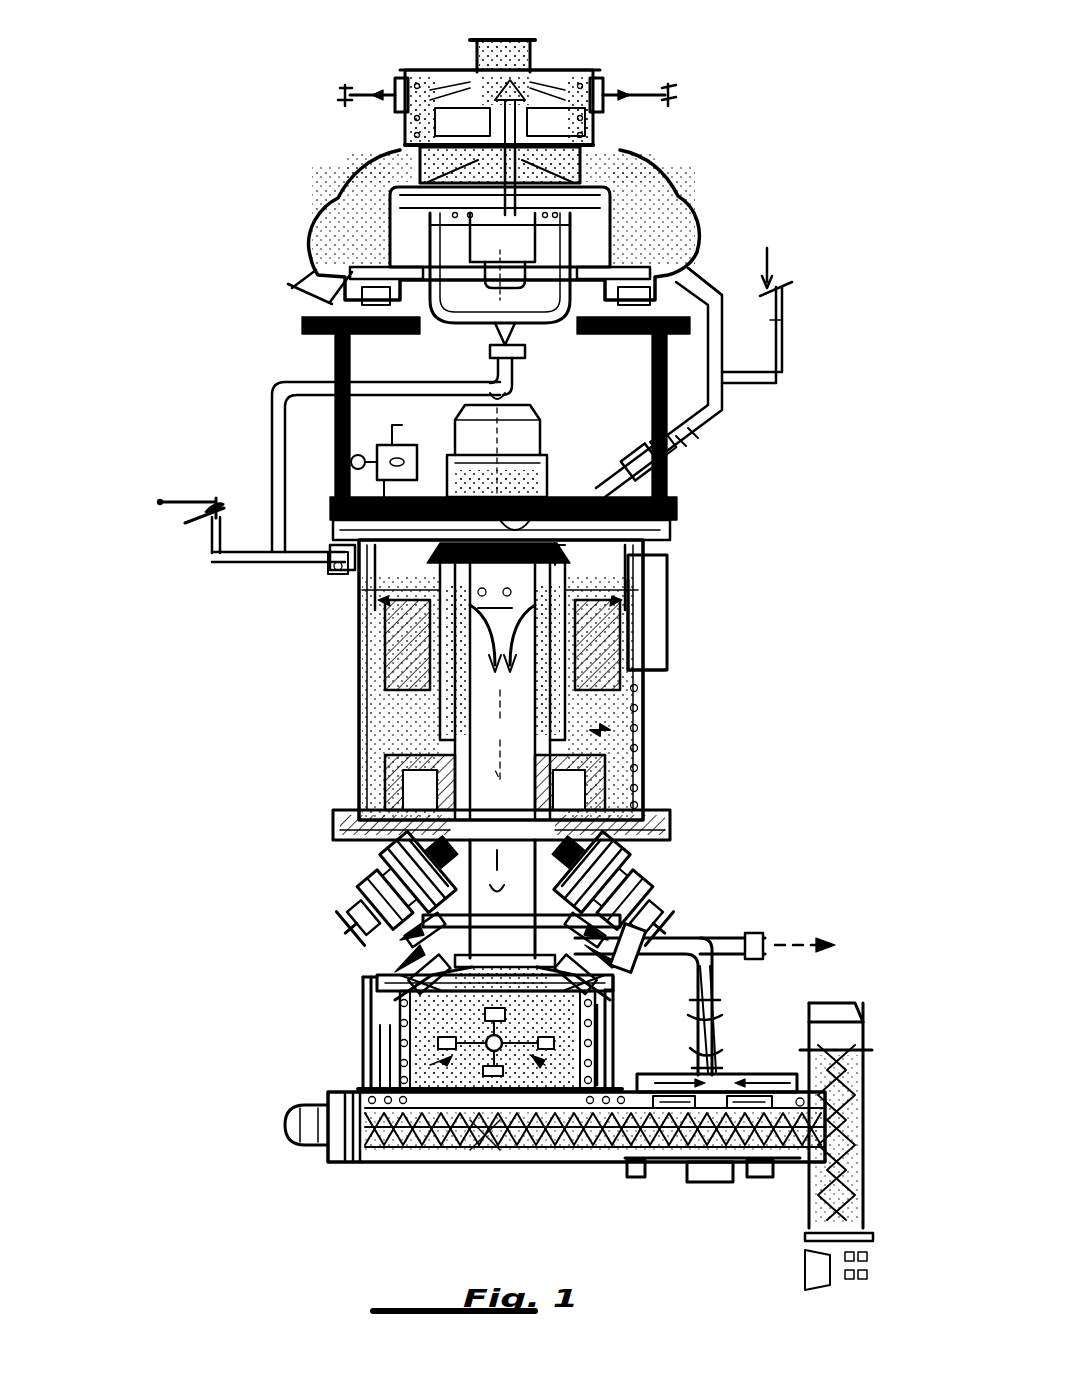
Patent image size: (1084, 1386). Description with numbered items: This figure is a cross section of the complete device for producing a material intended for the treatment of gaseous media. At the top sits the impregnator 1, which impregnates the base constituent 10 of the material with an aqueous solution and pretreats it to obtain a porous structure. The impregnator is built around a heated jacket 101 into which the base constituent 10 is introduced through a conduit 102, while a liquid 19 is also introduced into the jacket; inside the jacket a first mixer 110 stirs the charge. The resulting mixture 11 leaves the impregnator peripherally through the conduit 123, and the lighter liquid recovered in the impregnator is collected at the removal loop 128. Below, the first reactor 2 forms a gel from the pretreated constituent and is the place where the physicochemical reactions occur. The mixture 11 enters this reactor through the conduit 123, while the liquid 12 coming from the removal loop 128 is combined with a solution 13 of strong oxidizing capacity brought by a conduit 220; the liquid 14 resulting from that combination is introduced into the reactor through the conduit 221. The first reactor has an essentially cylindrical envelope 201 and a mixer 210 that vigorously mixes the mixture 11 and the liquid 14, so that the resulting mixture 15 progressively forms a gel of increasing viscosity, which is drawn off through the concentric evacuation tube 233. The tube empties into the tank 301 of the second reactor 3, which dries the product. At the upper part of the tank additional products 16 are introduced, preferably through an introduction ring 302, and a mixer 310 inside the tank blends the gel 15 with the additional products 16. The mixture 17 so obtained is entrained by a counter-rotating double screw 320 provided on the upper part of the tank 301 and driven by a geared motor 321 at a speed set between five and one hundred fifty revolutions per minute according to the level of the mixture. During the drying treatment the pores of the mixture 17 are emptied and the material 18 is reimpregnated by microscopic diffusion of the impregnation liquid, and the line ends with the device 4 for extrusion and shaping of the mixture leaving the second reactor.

The impregnator 1 is at (455, 312).
The base constituent 10 is at (502, 40).
The conduit 102 is at (532, 58).
The first mixer 110 is at (568, 80).
The jacket 101 is at (595, 135).
The liquid 19 is at (352, 100).
The mixture 11 is at (700, 262).
The conduit 123 is at (702, 290).
The removal loop 128 is at (515, 377).
The liquid 12 is at (272, 420).
The solution 13 is at (213, 557).
The conduit 220 is at (243, 563).
The liquid 14 is at (297, 565).
The conduit 221 is at (322, 570).
The first reactor 2 is at (491, 690).
The mixer 210 is at (640, 722).
The envelope 201 is at (645, 742).
The evacuation tube 233 is at (450, 927).
The mixture 15 is at (502, 899).
The additional products 16 is at (440, 938).
The second reactor 3 is at (449, 1032).
The mixture 17 is at (560, 1030).
The tank 301 is at (590, 1042).
The mixer 310 is at (450, 1061).
The introduction ring 302 is at (630, 935).
The material 18 is at (562, 1165).
The double screw 320 is at (472, 1165).
The geared motor 321 is at (278, 1135).
The device for extrusion and shaping 4 is at (885, 1120).